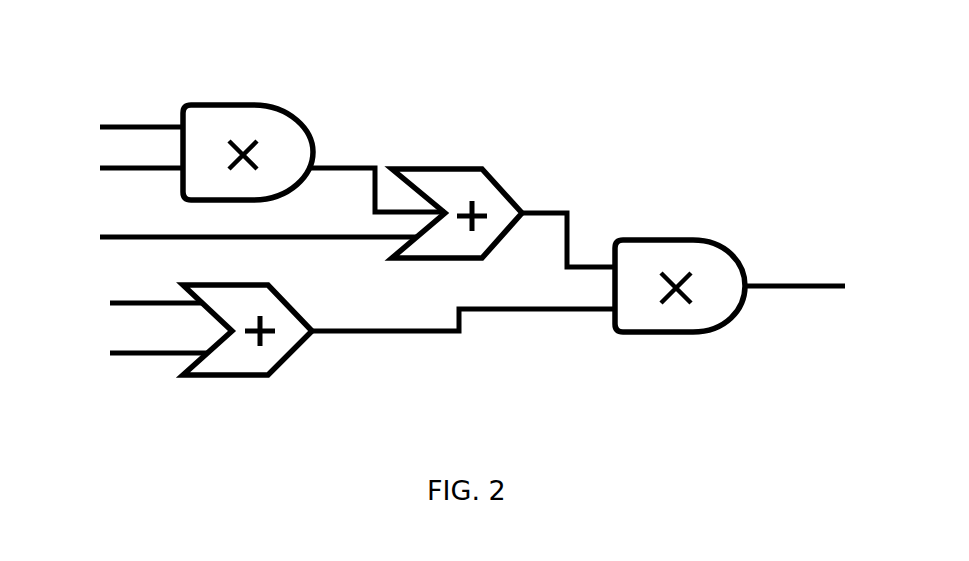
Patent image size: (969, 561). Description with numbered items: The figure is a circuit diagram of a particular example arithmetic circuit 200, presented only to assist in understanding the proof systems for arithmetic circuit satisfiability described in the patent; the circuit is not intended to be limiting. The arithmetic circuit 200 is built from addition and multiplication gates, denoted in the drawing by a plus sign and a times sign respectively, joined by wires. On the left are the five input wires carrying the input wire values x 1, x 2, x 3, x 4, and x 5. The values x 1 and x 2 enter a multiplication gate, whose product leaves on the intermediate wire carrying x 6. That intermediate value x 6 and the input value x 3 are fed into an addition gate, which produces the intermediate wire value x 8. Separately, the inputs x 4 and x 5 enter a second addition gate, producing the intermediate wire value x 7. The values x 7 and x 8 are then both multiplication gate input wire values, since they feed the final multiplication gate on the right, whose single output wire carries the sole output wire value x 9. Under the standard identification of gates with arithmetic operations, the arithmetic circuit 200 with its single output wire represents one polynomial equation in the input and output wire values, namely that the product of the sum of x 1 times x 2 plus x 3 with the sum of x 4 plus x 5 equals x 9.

The arithmetic circuit 200 is at (450, 80).
The input wire value x1 1 is at (117, 125).
The input wire value x2 2 is at (117, 170).
The input wire value x3 3 is at (234, 237).
The input wire value x4 4 is at (127, 305).
The input wire value x5 5 is at (130, 355).
The intermediate wire value x6 6 is at (378, 168).
The intermediate wire value x7 7 is at (463, 307).
The intermediate wire value x8 8 is at (568, 221).
The output wire value x9 9 is at (795, 261).